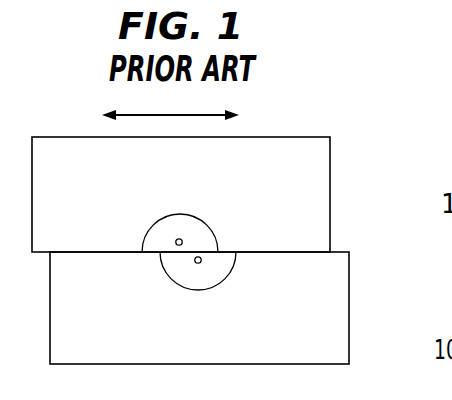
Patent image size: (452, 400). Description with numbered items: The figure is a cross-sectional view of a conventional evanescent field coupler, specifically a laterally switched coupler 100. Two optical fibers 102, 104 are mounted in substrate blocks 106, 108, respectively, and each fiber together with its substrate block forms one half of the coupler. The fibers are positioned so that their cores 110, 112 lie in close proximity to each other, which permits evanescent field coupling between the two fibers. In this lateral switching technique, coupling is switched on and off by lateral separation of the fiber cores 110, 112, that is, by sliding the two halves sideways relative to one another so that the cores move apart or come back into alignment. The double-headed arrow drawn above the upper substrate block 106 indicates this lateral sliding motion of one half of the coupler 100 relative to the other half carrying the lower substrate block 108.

The laterally switched coupler 100 is at (318, 121).
The optical fiber 102 is at (205, 214).
The optical fiber 104 is at (215, 287).
The substrate block 106 is at (331, 170).
The substrate block 108 is at (349, 302).
The core 110 is at (177, 238).
The core 112 is at (198, 264).